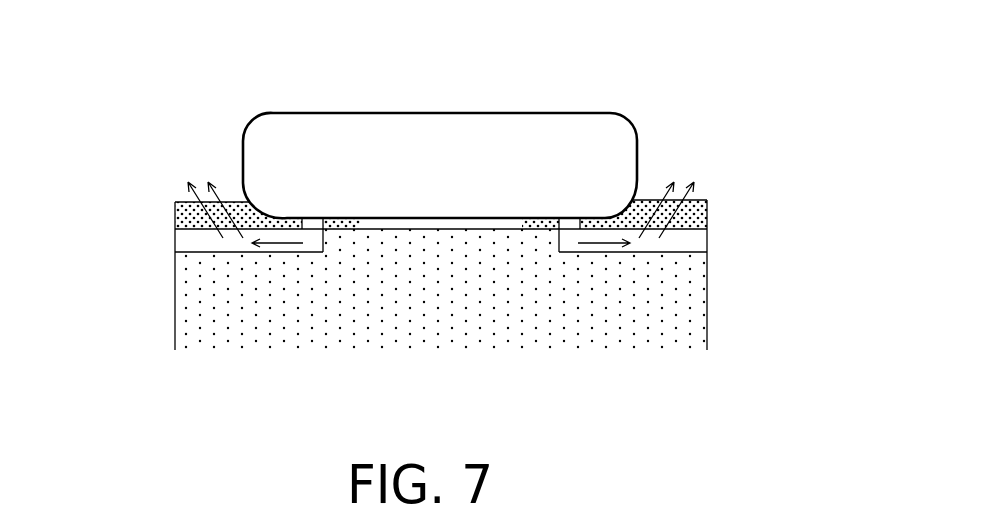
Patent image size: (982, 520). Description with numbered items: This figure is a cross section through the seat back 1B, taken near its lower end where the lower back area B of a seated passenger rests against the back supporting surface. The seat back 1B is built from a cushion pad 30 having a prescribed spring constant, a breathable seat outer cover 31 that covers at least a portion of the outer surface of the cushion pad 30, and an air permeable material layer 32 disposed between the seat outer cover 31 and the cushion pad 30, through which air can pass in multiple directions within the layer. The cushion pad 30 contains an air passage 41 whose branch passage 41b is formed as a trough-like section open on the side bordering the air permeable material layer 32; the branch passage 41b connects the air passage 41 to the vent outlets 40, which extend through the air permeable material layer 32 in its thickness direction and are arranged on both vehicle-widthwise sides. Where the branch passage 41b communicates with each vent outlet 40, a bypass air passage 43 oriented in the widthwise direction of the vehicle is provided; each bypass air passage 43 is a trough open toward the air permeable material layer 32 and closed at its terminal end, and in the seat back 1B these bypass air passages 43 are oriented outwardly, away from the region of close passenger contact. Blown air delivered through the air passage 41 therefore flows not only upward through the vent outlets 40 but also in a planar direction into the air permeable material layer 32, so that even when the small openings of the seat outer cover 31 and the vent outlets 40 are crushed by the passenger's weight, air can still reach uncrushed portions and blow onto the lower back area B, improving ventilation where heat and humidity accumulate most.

The seat back 1B is at (722, 298).
The cushion pad 30 is at (687, 328).
The breathable seat outer cover 31 is at (483, 218).
The air permeable material layer 32 is at (175, 212).
The vent outlets 40 is at (302, 218).
The air passage 41 is at (414, 320).
The branch passage 41b is at (302, 222).
The bypass air passages 43 is at (187, 252).
The lower back area B is at (457, 113).